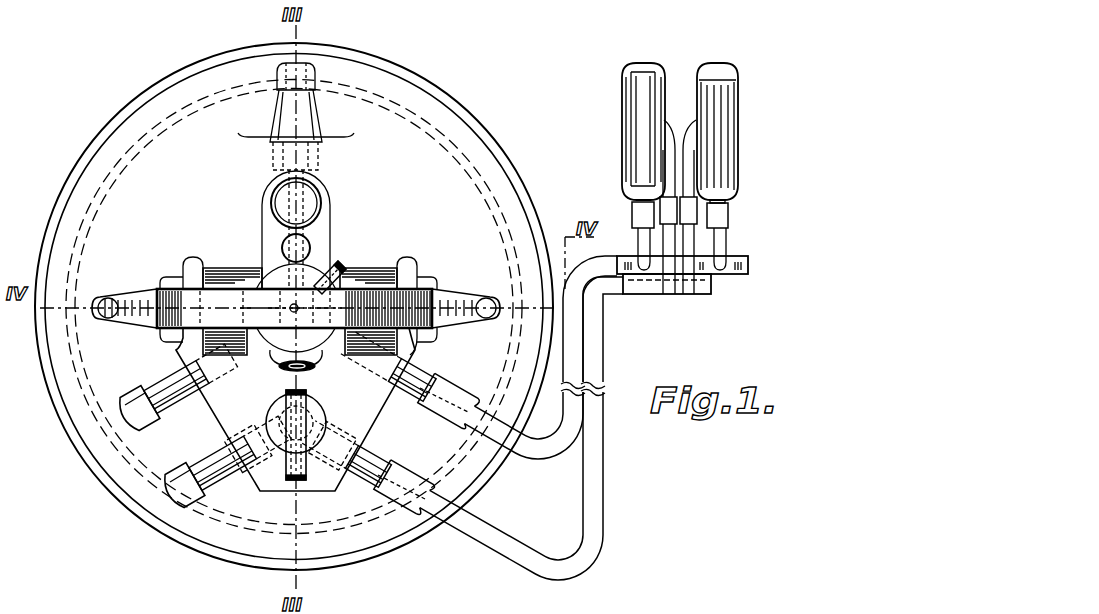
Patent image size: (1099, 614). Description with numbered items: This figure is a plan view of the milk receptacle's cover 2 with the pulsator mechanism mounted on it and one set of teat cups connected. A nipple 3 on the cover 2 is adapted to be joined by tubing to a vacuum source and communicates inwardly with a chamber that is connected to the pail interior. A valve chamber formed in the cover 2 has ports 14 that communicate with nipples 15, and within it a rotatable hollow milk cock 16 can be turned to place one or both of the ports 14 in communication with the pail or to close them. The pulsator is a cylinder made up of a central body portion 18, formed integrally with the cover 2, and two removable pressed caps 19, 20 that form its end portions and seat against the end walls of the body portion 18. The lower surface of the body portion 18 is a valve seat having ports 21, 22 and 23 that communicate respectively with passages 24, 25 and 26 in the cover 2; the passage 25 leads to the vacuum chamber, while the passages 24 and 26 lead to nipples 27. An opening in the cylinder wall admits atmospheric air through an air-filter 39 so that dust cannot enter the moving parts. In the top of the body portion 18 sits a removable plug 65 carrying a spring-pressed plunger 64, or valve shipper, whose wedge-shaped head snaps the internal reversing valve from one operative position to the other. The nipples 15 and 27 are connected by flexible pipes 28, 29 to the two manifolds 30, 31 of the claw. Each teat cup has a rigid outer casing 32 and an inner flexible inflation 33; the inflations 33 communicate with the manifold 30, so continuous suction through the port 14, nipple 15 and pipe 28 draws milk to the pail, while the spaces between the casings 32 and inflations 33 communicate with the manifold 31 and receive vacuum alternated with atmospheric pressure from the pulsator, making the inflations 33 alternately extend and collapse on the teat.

The cover 2 is at (467, 139).
The nipple 3 is at (303, 122).
The ports 14 is at (262, 420).
The nipples 15 is at (186, 492).
The milk cock 16 is at (297, 455).
The central body portion 18 is at (258, 262).
The cap 19 is at (192, 278).
The cap 20 is at (400, 277).
The port 21 is at (290, 350).
The suction port 22 is at (294, 352).
The port 23 is at (318, 352).
The passage 24 is at (232, 380).
The passage 25 is at (325, 270).
The passage 26 is at (362, 360).
The nipples 27 is at (158, 398).
The flexible pipe 28 is at (494, 545).
The flexible pipe 29 is at (540, 462).
The manifold 30 is at (626, 256).
The manifold 31 is at (633, 295).
The outer casing 32 is at (624, 137).
The inflation 33 is at (652, 110).
The air-filter 39 is at (312, 433).
The plunger 64 is at (296, 308).
The plug 65 is at (300, 282).